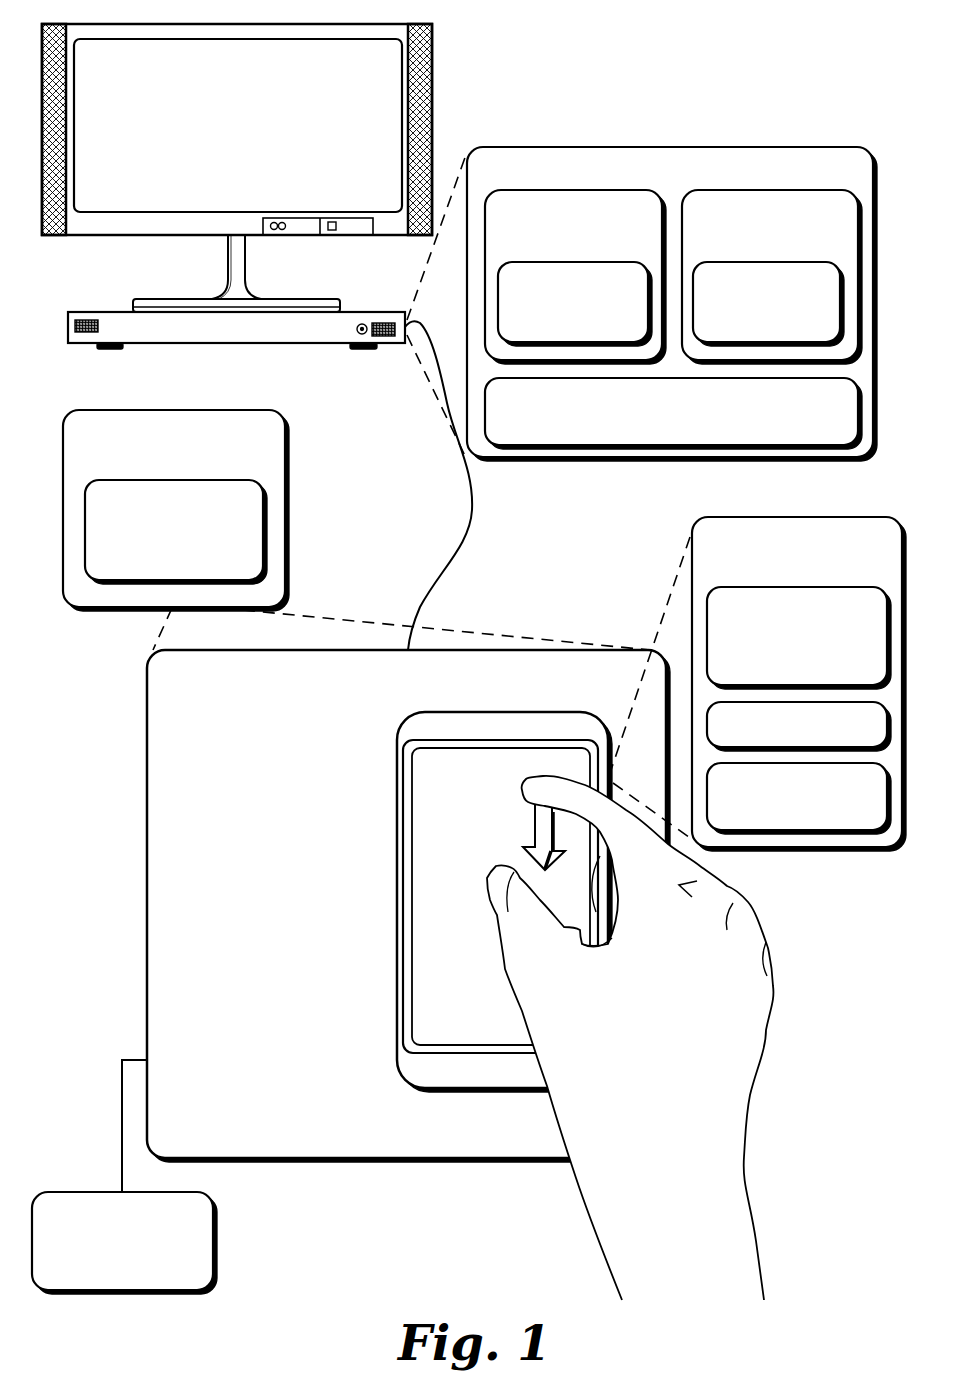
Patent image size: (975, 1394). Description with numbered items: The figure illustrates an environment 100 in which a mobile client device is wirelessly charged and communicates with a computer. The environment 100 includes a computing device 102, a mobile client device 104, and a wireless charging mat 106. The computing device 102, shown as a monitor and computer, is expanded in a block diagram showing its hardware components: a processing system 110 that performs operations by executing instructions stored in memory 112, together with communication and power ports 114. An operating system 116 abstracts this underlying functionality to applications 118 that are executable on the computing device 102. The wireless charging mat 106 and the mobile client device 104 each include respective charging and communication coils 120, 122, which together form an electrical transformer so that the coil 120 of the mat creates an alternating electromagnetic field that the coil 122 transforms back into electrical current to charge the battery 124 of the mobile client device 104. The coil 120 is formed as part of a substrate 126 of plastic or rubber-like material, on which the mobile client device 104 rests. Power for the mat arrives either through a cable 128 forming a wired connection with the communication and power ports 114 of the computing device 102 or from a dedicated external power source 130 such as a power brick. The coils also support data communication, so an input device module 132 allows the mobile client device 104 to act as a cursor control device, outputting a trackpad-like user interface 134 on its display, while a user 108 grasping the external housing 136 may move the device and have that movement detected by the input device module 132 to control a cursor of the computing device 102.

The environment 100 is at (731, 64).
The computing device 102 is at (459, 242).
The mobile client device 104 is at (758, 684).
The wireless charging mat 106 is at (356, 530).
The user hand 108 is at (630, 1038).
The processing system 110 is at (575, 277).
The memory 112 is at (772, 277).
The communication and power ports 114 is at (673, 413).
The operating system 116 is at (575, 304).
The applications 118 is at (768, 304).
The charging and communication coil 120 is at (176, 532).
The charging and communication coil 122 is at (799, 638).
The battery 124 is at (799, 726).
The substrate 126 is at (147, 822).
The cable 128 is at (433, 582).
The external power source 130 is at (124, 1177).
The input device module 132 is at (799, 798).
The user interface 134 is at (500, 896).
The external housing 136 is at (398, 767).